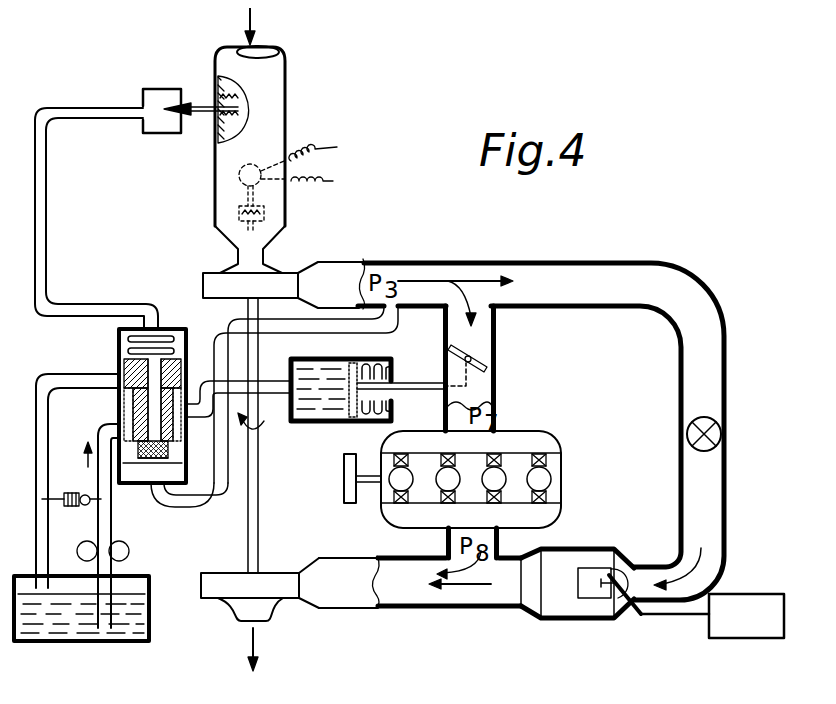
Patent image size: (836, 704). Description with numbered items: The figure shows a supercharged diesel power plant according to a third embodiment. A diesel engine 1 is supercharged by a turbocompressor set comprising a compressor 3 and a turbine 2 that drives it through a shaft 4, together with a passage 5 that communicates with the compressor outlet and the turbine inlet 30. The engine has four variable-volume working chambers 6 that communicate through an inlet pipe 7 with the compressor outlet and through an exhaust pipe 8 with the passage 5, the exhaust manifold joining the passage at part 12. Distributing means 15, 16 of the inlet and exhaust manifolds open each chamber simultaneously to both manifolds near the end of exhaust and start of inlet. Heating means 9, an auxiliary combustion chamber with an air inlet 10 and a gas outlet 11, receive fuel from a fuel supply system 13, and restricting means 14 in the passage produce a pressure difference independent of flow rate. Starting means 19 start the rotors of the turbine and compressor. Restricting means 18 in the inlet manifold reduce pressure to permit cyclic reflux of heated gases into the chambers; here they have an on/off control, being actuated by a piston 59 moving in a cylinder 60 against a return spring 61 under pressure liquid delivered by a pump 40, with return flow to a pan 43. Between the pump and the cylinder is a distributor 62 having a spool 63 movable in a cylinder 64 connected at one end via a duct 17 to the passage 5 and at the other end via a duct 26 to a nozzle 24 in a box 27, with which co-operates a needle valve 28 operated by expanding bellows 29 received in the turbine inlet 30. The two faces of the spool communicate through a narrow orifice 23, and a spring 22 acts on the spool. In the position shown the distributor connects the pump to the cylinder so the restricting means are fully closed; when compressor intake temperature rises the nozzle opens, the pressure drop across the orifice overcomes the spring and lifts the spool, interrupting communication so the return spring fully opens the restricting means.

The diesel engine 1 is at (572, 474).
The turbine 2 is at (205, 590).
The compressor 3 is at (212, 288).
The shaft 4 is at (256, 540).
The passage 5 is at (724, 333).
The variable-volume working chambers 6 is at (400, 484).
The inlet pipe 7 is at (496, 330).
The exhaust pipe 8 is at (446, 541).
The heating means 9 is at (556, 618).
The air inlet 10 is at (644, 574).
The gas outlet 11 is at (518, 597).
The part of the passage 12 is at (496, 553).
The fuel supply system 13 is at (772, 633).
The restricting means 14 is at (728, 431).
The distributing means 15 is at (446, 462).
The distributing means 16 is at (497, 505).
The duct 17 is at (236, 332).
The restricting means 18 is at (492, 357).
The starting means 19 is at (238, 210).
The spring 22 is at (125, 342).
The narrow orifice 23 is at (155, 458).
The nozzle 24 is at (182, 100).
The duct 26 is at (46, 222).
The box 27 is at (148, 88).
The needle valve 28 is at (182, 115).
The expanding bellows 29 is at (214, 78).
The turbine inlet 30 is at (272, 98).
The pump 40 is at (88, 534).
The pan 43 is at (66, 640).
The piston 59 is at (347, 392).
The cylinder 60 is at (310, 360).
The return spring 61 is at (372, 358).
The distributor 62 is at (108, 399).
The spool 63 is at (185, 447).
The cylinder 64 is at (123, 360).